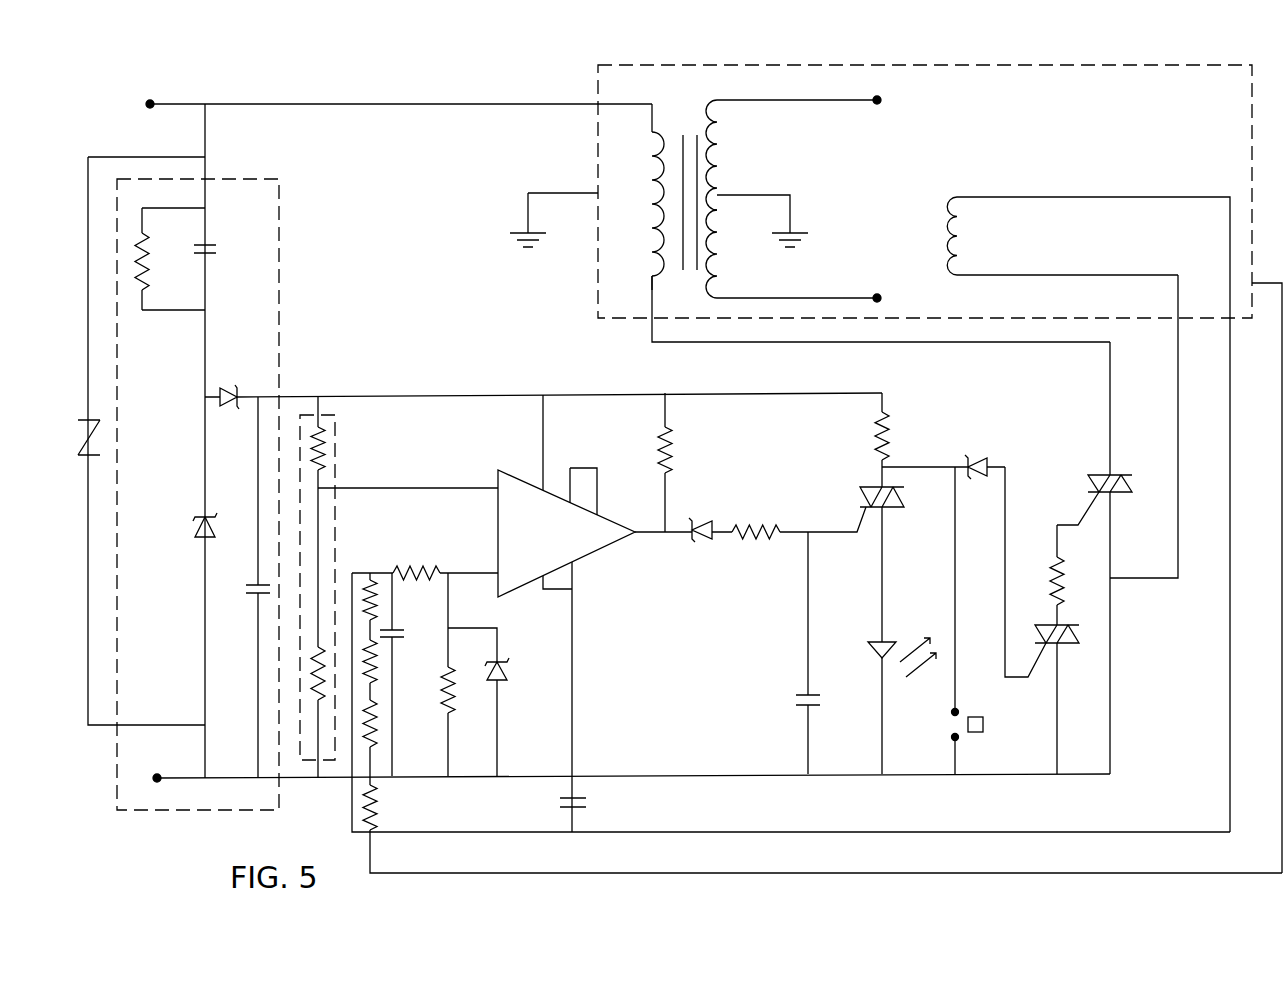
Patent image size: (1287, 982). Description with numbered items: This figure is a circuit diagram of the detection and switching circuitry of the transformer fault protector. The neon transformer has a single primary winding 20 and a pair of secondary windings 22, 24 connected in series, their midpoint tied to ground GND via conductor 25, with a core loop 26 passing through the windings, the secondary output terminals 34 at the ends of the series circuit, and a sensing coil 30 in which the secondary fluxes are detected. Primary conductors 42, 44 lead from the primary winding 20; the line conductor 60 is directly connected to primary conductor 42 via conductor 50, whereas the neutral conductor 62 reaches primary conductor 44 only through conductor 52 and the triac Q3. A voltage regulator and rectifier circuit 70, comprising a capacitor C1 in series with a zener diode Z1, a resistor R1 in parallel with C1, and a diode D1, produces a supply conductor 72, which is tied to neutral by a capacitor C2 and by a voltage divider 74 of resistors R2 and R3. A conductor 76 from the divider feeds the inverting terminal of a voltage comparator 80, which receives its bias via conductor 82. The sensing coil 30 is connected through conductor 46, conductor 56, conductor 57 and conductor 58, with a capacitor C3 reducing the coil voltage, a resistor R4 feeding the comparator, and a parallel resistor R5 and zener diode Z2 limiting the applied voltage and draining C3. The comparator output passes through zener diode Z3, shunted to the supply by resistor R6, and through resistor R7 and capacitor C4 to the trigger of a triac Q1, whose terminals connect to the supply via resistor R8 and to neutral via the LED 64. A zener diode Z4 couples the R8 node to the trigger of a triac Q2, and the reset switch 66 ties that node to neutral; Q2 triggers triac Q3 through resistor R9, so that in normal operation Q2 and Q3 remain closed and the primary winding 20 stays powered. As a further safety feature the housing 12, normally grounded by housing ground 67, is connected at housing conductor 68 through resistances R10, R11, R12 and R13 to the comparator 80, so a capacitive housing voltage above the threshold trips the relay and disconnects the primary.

The housing 12 is at (675, 208).
The primary winding 20 is at (655, 232).
The secondary winding 22 is at (729, 145).
The secondary winding 24 is at (727, 250).
The conductor 25 is at (748, 196).
The core loop 26 is at (690, 165).
The sensing coil 30 is at (957, 218).
The secondary output terminals 34 is at (880, 100).
The primary conductor 42 is at (598, 100).
The primary conductor 44 is at (652, 287).
The conductor 46 is at (1107, 274).
The conductor 50 is at (330, 102).
The conductor 52 is at (987, 342).
The conductor 56 is at (1178, 500).
The conductor 57 is at (1112, 648).
The conductor 58 is at (1038, 197).
The line conductor 60 is at (152, 107).
The neutral conductor 62 is at (157, 782).
The LED 64 is at (868, 640).
The reset switch 66 is at (983, 725).
The housing ground 67 is at (524, 230).
The housing conductor 68 is at (1282, 470).
The voltage regulator and rectifier circuit 70 is at (279, 250).
The supply conductor 72 is at (416, 396).
The voltage divider 74 is at (336, 436).
The conductor 76 is at (431, 487).
The voltage comparator 80 is at (525, 470).
The conductor 82 is at (544, 424).
The resistor R1 is at (150, 258).
The capacitor C1 is at (210, 242).
The diode D1 is at (227, 388).
The zener diode Z1 is at (200, 532).
The capacitor C2 is at (258, 594).
The resistor R2 is at (323, 447).
The resistor R3 is at (316, 700).
The resistor R4 is at (428, 572).
The resistance R10 is at (380, 583).
The resistance R11 is at (378, 660).
The resistance R12 is at (378, 733).
The resistance R13 is at (378, 803).
The capacitor C3 is at (398, 633).
The resistor R5 is at (455, 688).
The zener diode Z2 is at (508, 672).
The resistor R6 is at (670, 445).
The zener diode Z3 is at (705, 522).
The resistor R7 is at (762, 520).
The capacitor C4 is at (805, 698).
The resistor R8 is at (895, 427).
The triac Q1 is at (900, 498).
The zener diode Z4 is at (975, 455).
The triac Q2 is at (1080, 638).
The resistor R9 is at (1055, 580).
The triac Q3 is at (1125, 470).